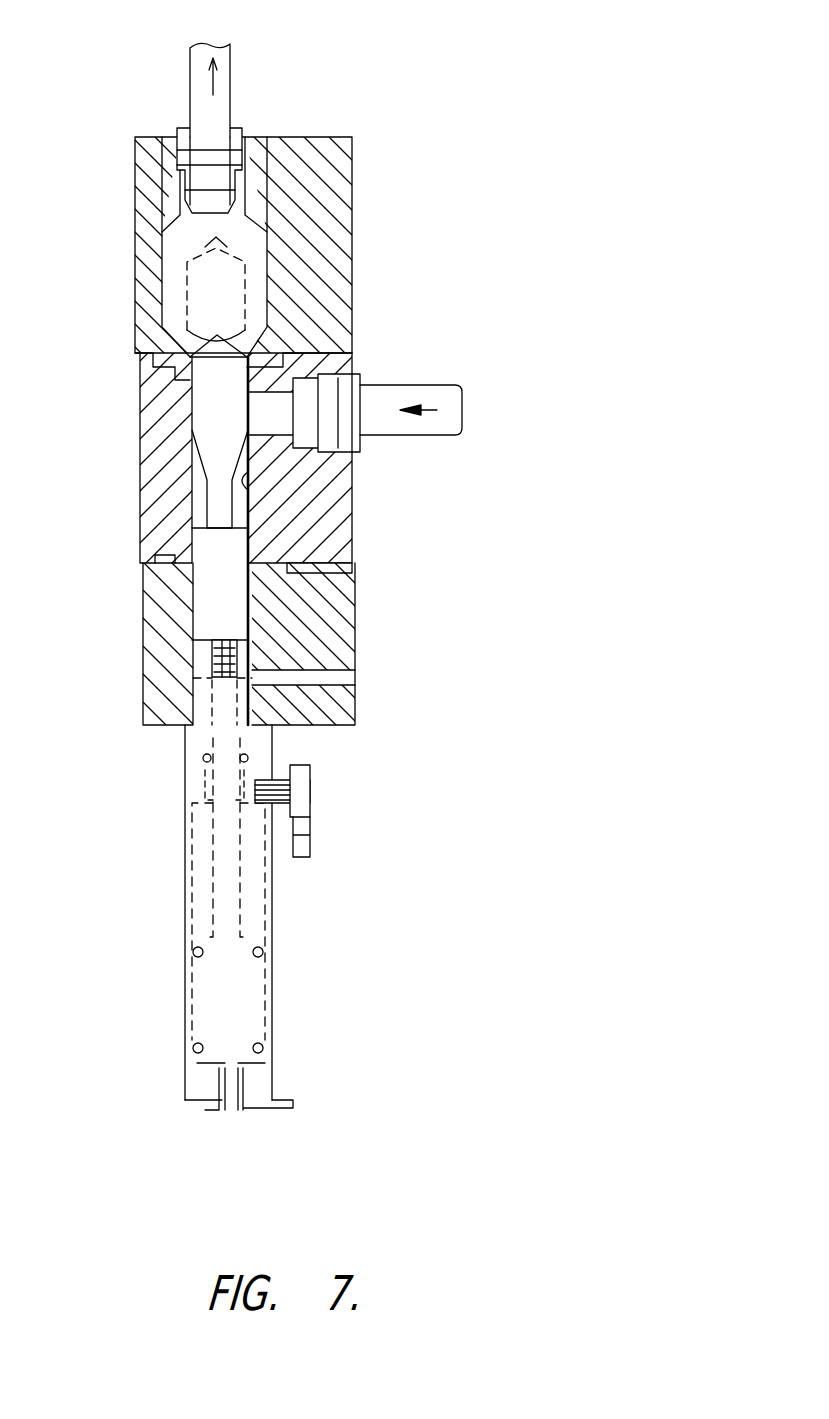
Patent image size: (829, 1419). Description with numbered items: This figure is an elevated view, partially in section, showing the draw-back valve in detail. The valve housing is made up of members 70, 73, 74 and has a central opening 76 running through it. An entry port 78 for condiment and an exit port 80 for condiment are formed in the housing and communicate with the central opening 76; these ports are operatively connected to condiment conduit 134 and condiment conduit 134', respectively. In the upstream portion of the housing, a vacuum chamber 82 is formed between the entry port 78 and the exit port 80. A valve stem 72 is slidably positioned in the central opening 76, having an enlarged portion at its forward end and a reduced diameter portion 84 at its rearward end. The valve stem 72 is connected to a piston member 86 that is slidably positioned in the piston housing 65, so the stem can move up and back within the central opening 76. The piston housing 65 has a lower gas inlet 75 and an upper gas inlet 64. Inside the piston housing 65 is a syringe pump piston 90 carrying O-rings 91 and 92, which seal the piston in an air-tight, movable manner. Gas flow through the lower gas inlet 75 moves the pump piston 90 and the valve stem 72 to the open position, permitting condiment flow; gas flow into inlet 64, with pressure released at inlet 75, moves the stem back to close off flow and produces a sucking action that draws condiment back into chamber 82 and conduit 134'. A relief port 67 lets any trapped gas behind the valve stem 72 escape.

The upper gas inlet 64 is at (312, 807).
The piston housing 65 is at (273, 940).
The relief port 67 is at (357, 684).
The valve housing member 70 is at (143, 657).
The valve stem 72 is at (185, 409).
The valve housing member 73 is at (140, 452).
The valve housing member 74 is at (135, 237).
The lower gas inlet 75 is at (285, 1105).
The central opening 76 is at (250, 484).
The entry port 78 is at (358, 378).
The exit port 80 is at (228, 128).
The vacuum chamber 82 is at (258, 281).
The reduced diameter portion 84 is at (236, 513).
The piston member 86 is at (238, 645).
The syringe pump piston 90 is at (208, 988).
The O-ring 91 is at (194, 948).
The O-ring 92 is at (193, 1048).
The condiment conduit 134 is at (439, 384).
The condiment conduit 134' is at (251, 72).